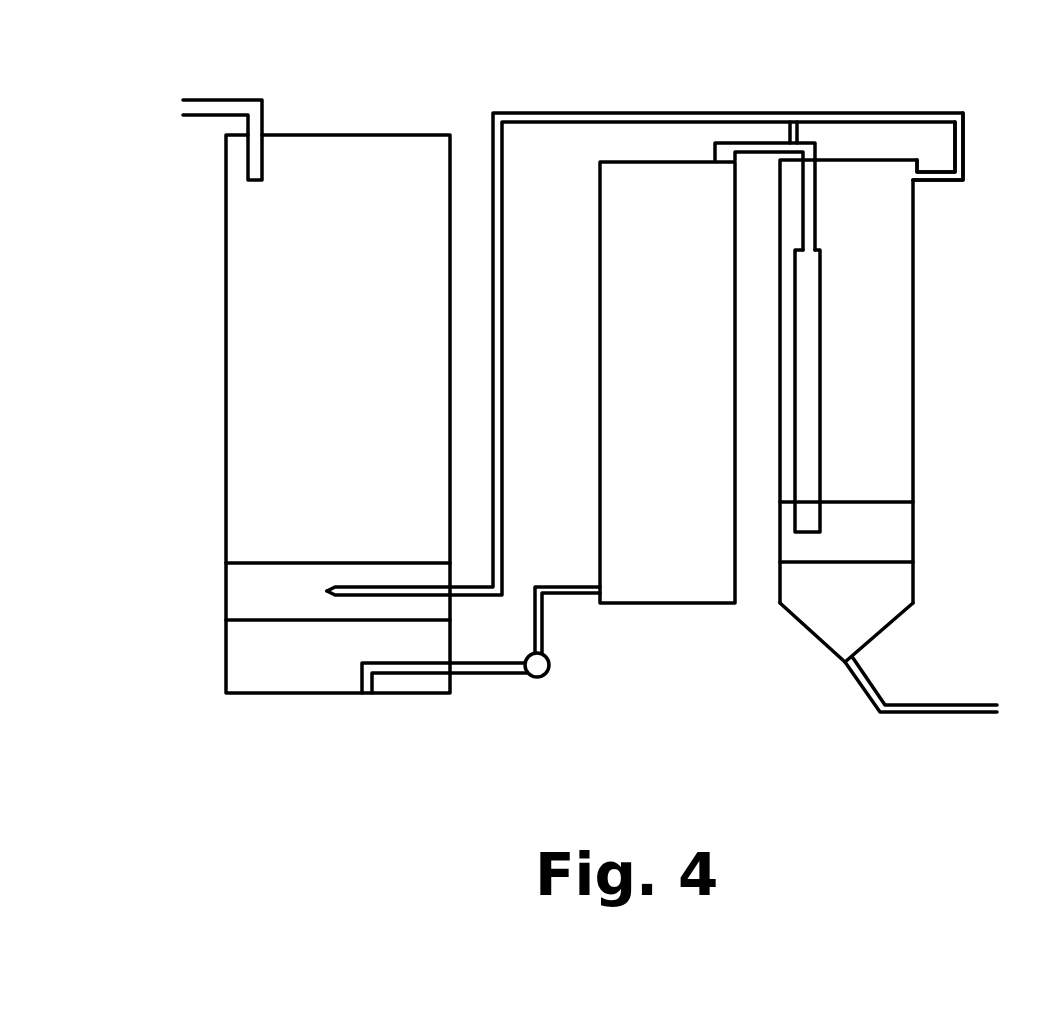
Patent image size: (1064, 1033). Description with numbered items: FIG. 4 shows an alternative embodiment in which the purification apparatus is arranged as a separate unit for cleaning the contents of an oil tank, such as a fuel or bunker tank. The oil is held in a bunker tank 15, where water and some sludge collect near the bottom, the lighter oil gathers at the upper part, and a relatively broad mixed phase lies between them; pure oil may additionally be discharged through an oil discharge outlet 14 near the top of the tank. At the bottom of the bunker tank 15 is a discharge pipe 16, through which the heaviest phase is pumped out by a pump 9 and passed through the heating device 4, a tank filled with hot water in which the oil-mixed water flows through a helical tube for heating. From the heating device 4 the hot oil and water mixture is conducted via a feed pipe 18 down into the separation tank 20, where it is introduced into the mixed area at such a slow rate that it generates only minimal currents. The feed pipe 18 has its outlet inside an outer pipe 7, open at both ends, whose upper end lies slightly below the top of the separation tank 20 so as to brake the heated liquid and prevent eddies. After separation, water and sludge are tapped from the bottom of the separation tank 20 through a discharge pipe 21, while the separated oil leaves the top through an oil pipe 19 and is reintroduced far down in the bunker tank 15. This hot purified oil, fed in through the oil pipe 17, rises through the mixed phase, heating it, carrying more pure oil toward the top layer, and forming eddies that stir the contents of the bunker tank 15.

The oil discharge outlet 14 is at (222, 103).
The bunker tank 15 is at (226, 438).
The oil pipe 17 is at (340, 585).
The oil pipe 19 is at (963, 148).
The heating device 4 is at (640, 603).
The pump 9 is at (548, 672).
The discharge pipe 16 is at (473, 673).
The feed pipe 18 is at (793, 143).
The separation tank 20 is at (913, 250).
The outer pipe 7 is at (820, 455).
The discharge pipe 21 is at (933, 710).